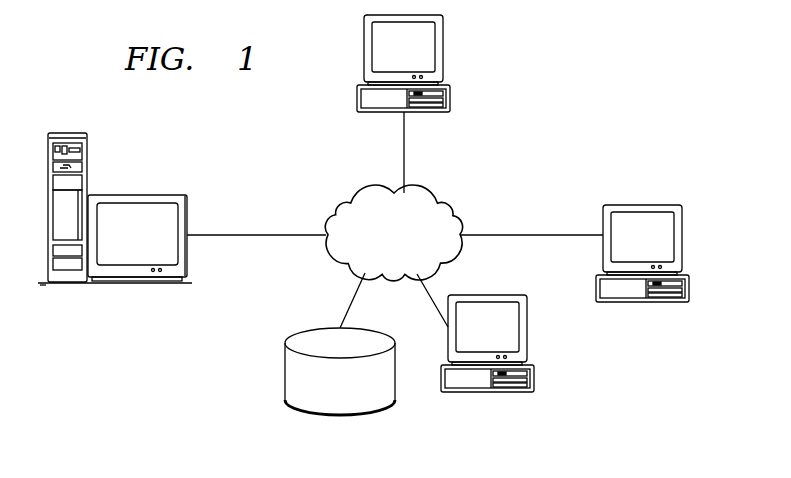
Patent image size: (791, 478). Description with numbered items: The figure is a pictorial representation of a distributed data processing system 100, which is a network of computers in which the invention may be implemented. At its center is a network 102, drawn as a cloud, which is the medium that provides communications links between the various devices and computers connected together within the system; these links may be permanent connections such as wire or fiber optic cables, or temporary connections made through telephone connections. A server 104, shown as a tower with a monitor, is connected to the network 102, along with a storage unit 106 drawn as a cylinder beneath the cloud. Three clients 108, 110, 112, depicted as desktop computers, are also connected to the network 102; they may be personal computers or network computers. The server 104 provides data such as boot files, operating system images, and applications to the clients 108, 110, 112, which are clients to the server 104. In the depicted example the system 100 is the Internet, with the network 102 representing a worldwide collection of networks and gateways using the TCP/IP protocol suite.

The distributed data processing system 100 is at (158, 347).
The network 102 is at (377, 193).
The server 104 is at (137, 195).
The storage unit 106 is at (285, 370).
The client 108 is at (445, 50).
The client 110 is at (682, 240).
The client 112 is at (528, 328).